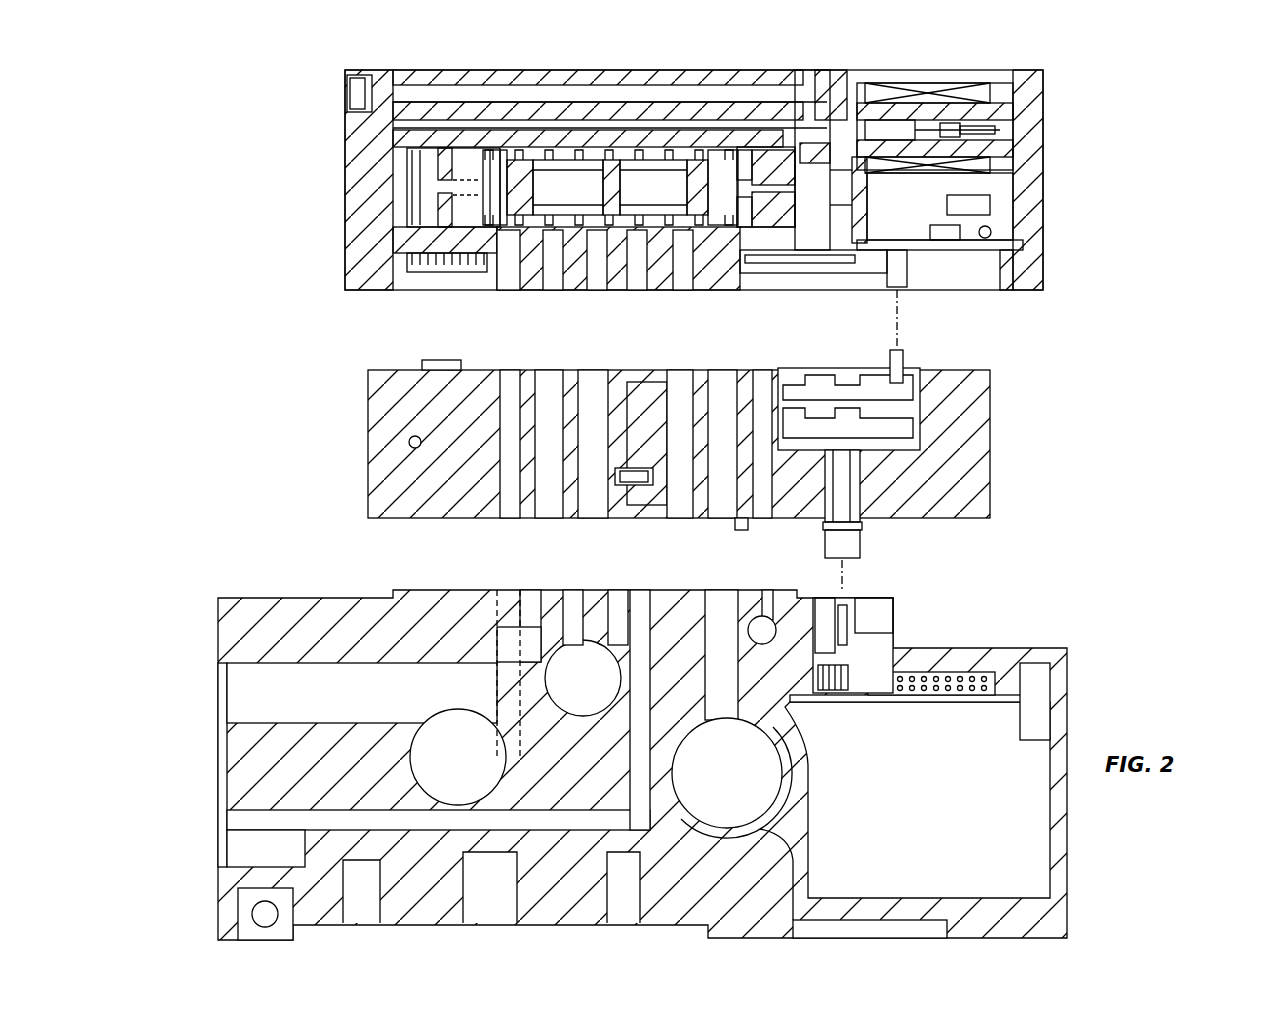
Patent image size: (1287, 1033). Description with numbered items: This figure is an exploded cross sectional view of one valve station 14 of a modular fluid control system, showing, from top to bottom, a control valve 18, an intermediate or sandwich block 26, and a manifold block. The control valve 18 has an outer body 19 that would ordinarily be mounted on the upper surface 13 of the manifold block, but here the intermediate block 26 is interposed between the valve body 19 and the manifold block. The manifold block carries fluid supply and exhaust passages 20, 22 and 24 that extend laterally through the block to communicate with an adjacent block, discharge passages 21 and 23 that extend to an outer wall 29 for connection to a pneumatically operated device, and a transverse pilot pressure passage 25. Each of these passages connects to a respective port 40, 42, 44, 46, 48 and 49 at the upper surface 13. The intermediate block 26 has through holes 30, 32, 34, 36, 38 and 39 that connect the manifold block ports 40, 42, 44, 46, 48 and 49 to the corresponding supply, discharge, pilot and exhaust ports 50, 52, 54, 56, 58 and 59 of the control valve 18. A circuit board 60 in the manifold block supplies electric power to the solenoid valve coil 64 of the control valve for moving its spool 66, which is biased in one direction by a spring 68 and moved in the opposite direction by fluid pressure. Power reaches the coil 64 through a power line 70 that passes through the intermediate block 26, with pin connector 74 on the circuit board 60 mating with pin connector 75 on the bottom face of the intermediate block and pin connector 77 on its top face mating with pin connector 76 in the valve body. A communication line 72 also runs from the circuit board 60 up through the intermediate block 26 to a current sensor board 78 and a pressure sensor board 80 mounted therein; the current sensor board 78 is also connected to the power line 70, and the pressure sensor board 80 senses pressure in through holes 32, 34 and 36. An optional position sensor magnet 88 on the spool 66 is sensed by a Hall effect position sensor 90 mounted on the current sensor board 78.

The upper surface 13 is at (436, 590).
The valve station 14 is at (1130, 240).
The control valve 18 is at (698, 173).
The outer body 19 is at (357, 155).
The fluid supply passage 20 is at (458, 757).
The discharge passage 21 is at (362, 693).
The fluid exhaust passage 22 is at (732, 819).
The discharge passage 23 is at (360, 820).
The fluid exhaust passage 24 is at (583, 678).
The transverse pilot pressure passage 25 is at (770, 640).
The intermediate block 26 is at (705, 440).
The outer wall 29 is at (617, 743).
The through hole 30 is at (512, 390).
The through hole 32 is at (550, 390).
The through hole 34 is at (594, 390).
The through hole 36 is at (683, 390).
The through hole 38 is at (722, 385).
The through hole 39 is at (762, 385).
The port 40 is at (522, 605).
The port 42 is at (568, 605).
The port 44 is at (615, 605).
The port 46 is at (643, 605).
The port 48 is at (732, 600).
The port 49 is at (770, 600).
The port 50 is at (505, 285).
The port 52 is at (552, 272).
The port 54 is at (598, 272).
The port 56 is at (638, 272).
The port 58 is at (682, 270).
The port 59 is at (762, 285).
The circuit board 60 is at (1002, 705).
The solenoid valve coil 64 is at (910, 118).
The spool 66 is at (527, 178).
The spring 68 is at (478, 175).
The power line 70 is at (867, 486).
The communication line 72 is at (850, 500).
The pin connector 74 is at (860, 660).
The pin connector 75 is at (860, 548).
The pin connector 76 is at (908, 265).
The pin connector 77 is at (905, 348).
The current sensor board 78 is at (890, 420).
The pressure sensor board 80 is at (878, 370).
The position sensor magnet 88 is at (725, 178).
The position sensor 90 is at (808, 432).